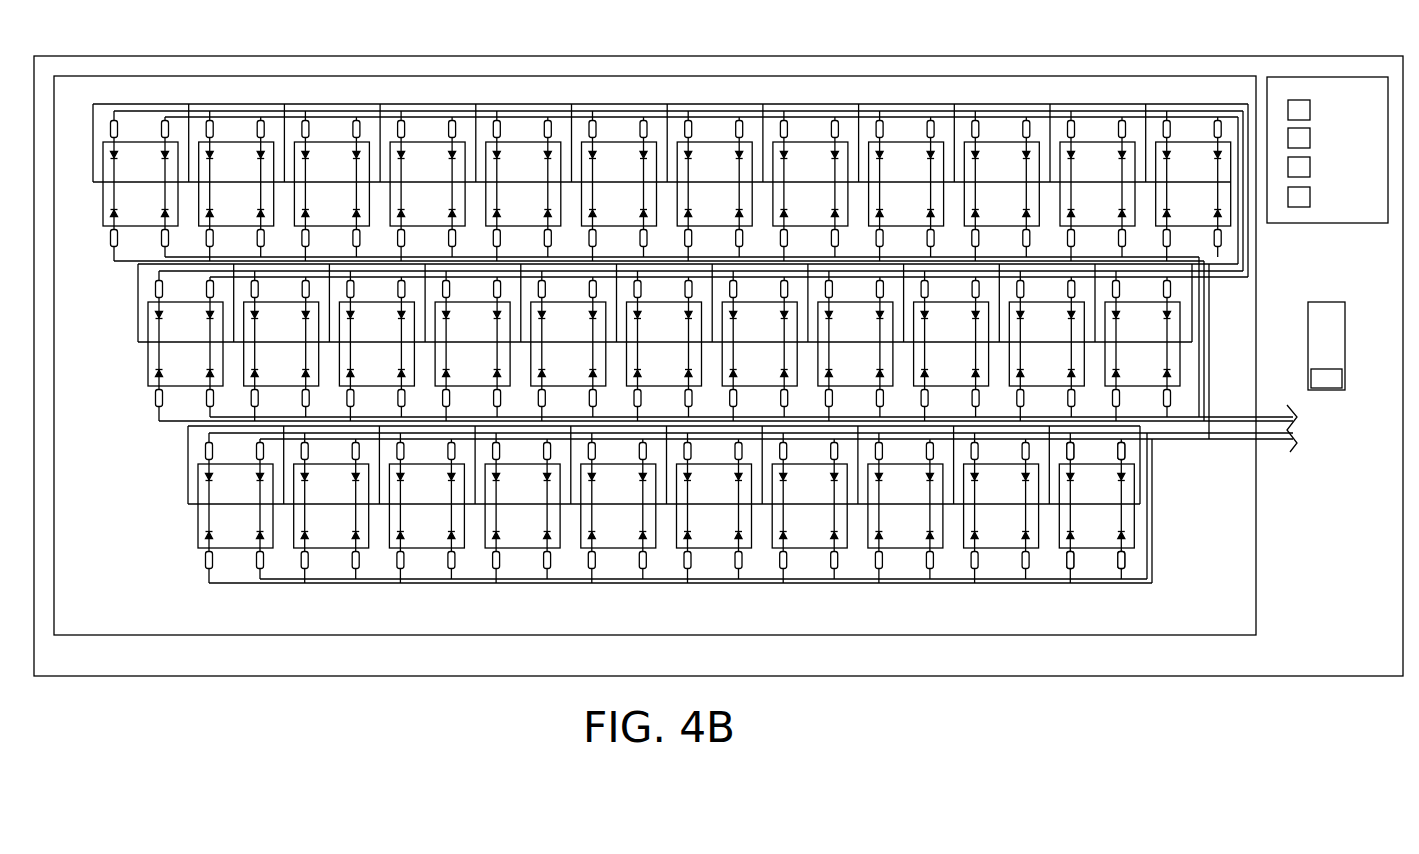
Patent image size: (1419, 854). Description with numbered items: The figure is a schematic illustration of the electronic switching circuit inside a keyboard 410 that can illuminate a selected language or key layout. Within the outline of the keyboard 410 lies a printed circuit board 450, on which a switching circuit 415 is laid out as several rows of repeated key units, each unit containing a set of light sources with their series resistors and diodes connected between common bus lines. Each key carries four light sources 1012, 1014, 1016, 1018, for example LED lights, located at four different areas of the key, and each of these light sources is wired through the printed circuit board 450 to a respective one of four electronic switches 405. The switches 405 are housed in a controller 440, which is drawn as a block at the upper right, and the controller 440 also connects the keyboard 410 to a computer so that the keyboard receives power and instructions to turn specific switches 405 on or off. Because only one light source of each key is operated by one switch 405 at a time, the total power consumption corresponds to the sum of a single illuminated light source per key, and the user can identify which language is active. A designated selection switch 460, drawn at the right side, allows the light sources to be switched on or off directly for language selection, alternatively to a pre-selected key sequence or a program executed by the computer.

The keyboard 410 is at (128, 44).
The switching circuit 415 is at (126, 348).
The controller 440 is at (1352, 223).
The switch 405 is at (1310, 197).
The printed circuit board 450 is at (239, 635).
The selection switch 460 is at (1308, 346).
The light source 1012 is at (1068, 453).
The light source 1014 is at (1125, 450).
The light source 1016 is at (1125, 565).
The light source 1018 is at (1072, 564).